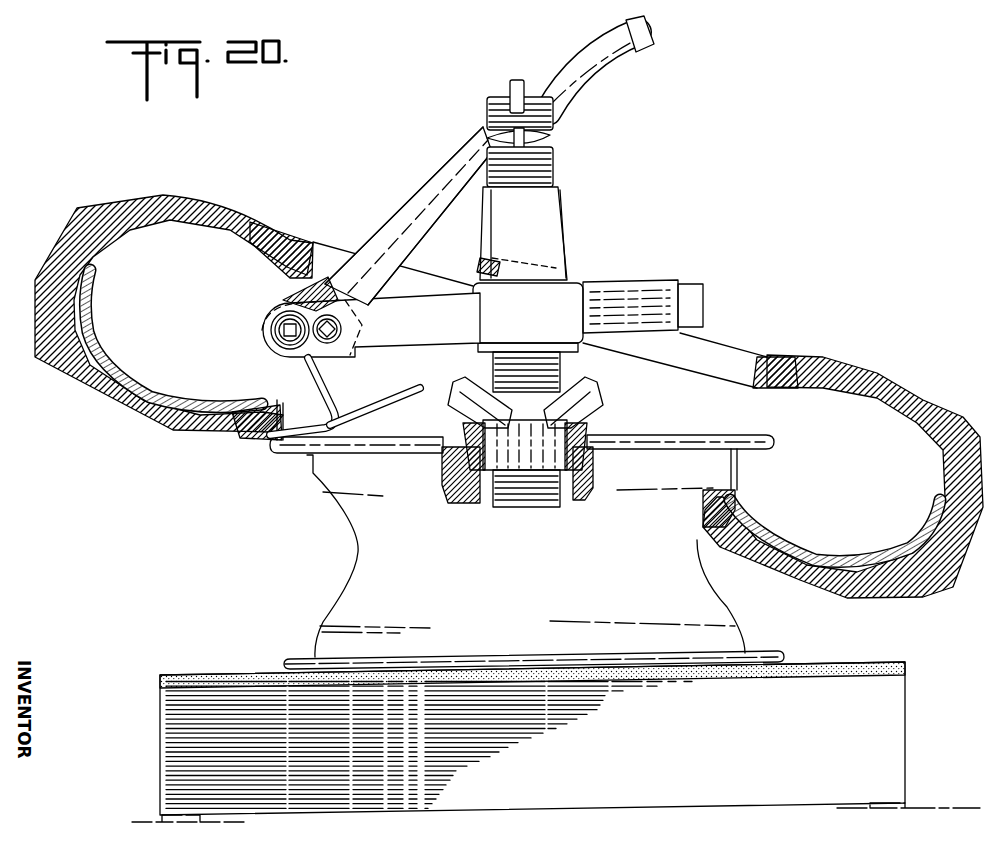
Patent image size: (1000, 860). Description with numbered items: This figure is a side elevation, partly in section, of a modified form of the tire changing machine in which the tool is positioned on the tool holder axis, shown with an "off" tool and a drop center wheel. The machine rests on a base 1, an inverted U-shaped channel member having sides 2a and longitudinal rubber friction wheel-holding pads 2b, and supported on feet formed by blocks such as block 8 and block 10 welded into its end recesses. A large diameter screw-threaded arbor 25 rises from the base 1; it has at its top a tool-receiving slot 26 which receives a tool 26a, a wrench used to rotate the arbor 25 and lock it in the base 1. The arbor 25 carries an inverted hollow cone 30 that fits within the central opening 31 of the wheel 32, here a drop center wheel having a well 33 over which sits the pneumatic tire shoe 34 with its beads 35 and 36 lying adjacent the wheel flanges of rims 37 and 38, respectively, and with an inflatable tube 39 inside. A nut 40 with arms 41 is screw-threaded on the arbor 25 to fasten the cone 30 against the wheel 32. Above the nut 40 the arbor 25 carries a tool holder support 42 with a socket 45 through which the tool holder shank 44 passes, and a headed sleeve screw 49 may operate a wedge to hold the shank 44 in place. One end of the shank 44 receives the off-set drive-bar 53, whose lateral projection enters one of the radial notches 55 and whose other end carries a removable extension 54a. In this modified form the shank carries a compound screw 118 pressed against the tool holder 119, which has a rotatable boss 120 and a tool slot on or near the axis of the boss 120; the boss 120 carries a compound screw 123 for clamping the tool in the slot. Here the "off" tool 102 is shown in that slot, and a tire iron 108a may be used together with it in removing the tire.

The base 1 is at (505, 716).
The sides 2a is at (182, 750).
The longitudinal rubber friction wheel-holding pads 2b is at (193, 675).
The block 8 is at (162, 815).
The block 10 is at (905, 806).
The large diameter screw-threaded arbor 25 is at (556, 150).
The tool-receiving slot 26 is at (506, 77).
The tool 26a is at (500, 97).
The inverted hollow cone 30 is at (547, 459).
The central opening 31 is at (575, 490).
The wheel 32 is at (515, 556).
The well 33 is at (355, 553).
The pneumatic tire shoe 34 is at (73, 238).
The bead 35 is at (297, 252).
The bead 36 is at (275, 410).
The rim 37 is at (285, 452).
The rim 38 is at (291, 660).
The inflatable tube 39 is at (117, 325).
The nut 40 is at (517, 460).
The arms 41 is at (595, 392).
The tool holder support 42 is at (546, 222).
The tool holder shank 44 is at (620, 290).
The socket 45 is at (570, 292).
The headed sleeve screw 49 is at (495, 272).
The off-set drive-bar 53 is at (418, 208).
The removable extension 54a is at (650, 35).
The radial notches 55 is at (702, 293).
The "off" tool 102 is at (328, 380).
The tire iron 108a is at (410, 395).
The compound screw 118 is at (352, 332).
The tool holder 119 is at (342, 312).
The rotatable boss 120 is at (278, 340).
The compound screw 123 is at (276, 330).